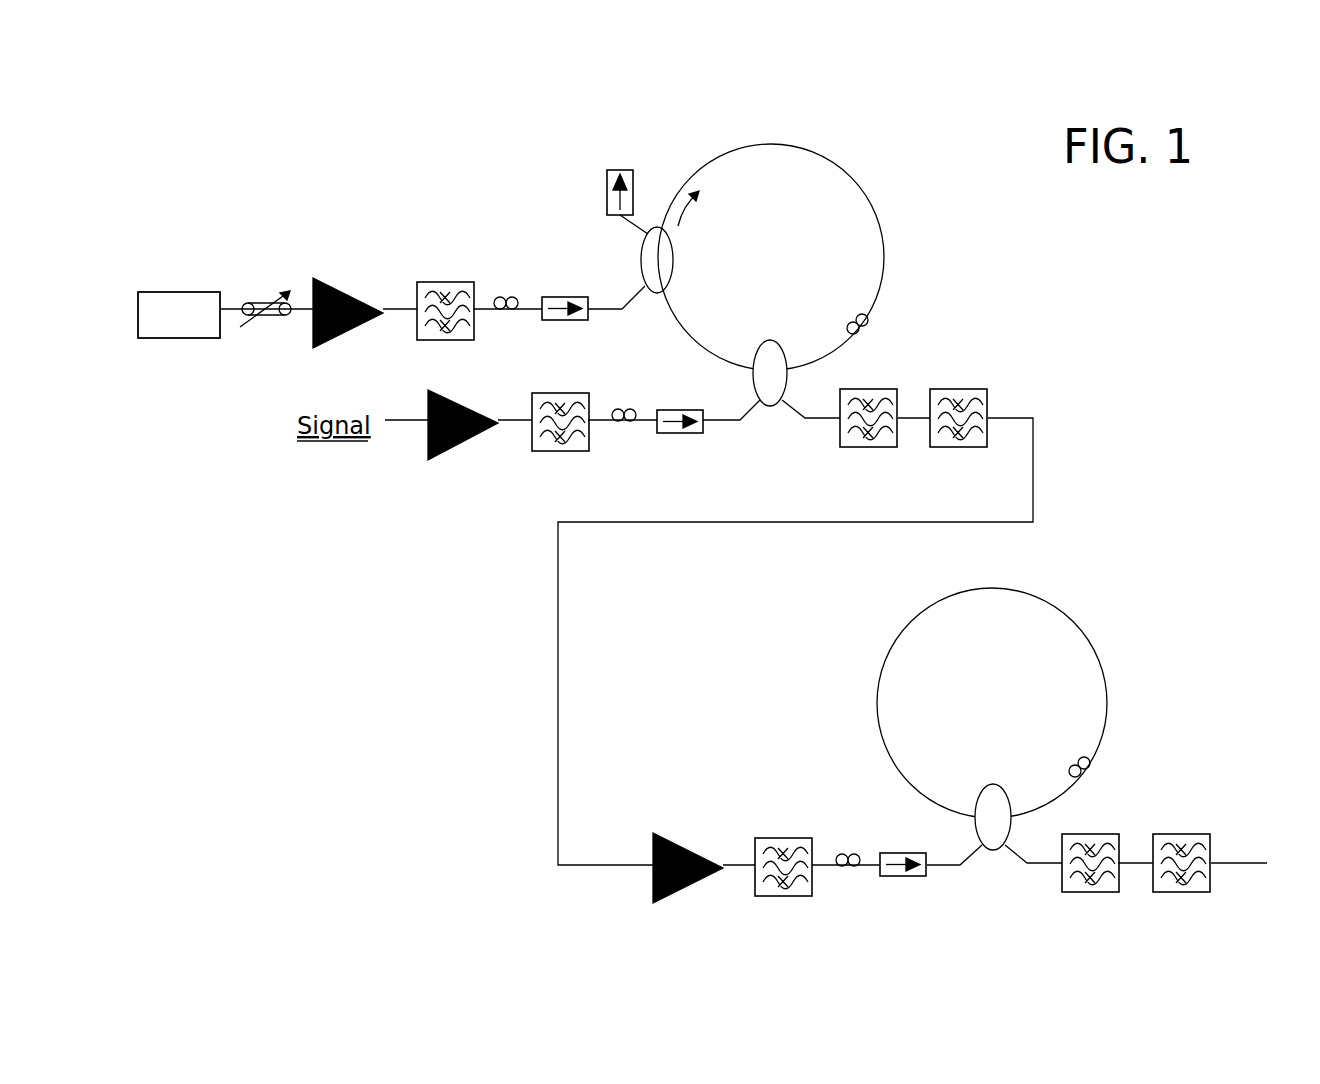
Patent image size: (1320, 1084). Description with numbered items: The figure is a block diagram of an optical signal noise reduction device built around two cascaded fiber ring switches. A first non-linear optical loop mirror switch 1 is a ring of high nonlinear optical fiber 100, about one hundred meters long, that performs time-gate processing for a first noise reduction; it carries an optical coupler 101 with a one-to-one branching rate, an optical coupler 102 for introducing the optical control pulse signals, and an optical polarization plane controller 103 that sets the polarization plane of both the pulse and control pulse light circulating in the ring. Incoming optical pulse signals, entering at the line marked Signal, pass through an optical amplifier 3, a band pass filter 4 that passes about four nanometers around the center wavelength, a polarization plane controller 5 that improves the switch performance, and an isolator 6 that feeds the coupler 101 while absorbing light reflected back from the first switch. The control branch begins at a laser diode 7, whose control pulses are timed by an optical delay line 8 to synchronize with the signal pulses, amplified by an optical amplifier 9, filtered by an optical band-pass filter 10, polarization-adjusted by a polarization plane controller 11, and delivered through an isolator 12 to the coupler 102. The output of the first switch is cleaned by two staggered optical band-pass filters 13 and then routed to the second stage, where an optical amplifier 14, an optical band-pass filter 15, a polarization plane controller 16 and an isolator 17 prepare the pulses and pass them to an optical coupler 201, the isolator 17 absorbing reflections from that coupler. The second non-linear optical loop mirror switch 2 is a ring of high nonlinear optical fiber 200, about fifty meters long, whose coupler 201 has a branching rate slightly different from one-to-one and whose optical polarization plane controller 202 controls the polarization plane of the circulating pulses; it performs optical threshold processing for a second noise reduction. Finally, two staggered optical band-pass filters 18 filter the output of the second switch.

The first non-linear optical loop mirror switch 1 is at (770, 262).
The second non-linear optical loop mirror switch 2 is at (992, 706).
The optical amplifier 3 is at (458, 446).
The band pass filter 4 is at (552, 452).
The polarization plane controller 5 is at (619, 408).
The isolator 6 is at (683, 434).
The laser diode 7 is at (157, 292).
The optical delay line 8 is at (262, 300).
The optical amplifier 9 is at (352, 292).
The optical band-pass filter 10 is at (439, 282).
The polarization plane controller 11 is at (502, 296).
The isolator 12 is at (553, 296).
The optical band-pass filters 13 is at (988, 451).
The optical amplifier 14 is at (690, 850).
The optical band-pass filter 15 is at (775, 838).
The polarization plane controller 16 is at (844, 852).
The isolator 17 is at (893, 853).
The optical band-pass filters 18 is at (1211, 831).
The high nonlinear ring optical fiber 100 is at (869, 182).
The optical coupler 101 is at (773, 406).
The optical coupler 102 is at (641, 264).
The optical polarization plane controller 103 is at (870, 324).
The high nonlinear ring optical fiber 200 is at (1053, 602).
The optical coupler 201 is at (993, 852).
The optical polarization plane controller 202 is at (1090, 764).